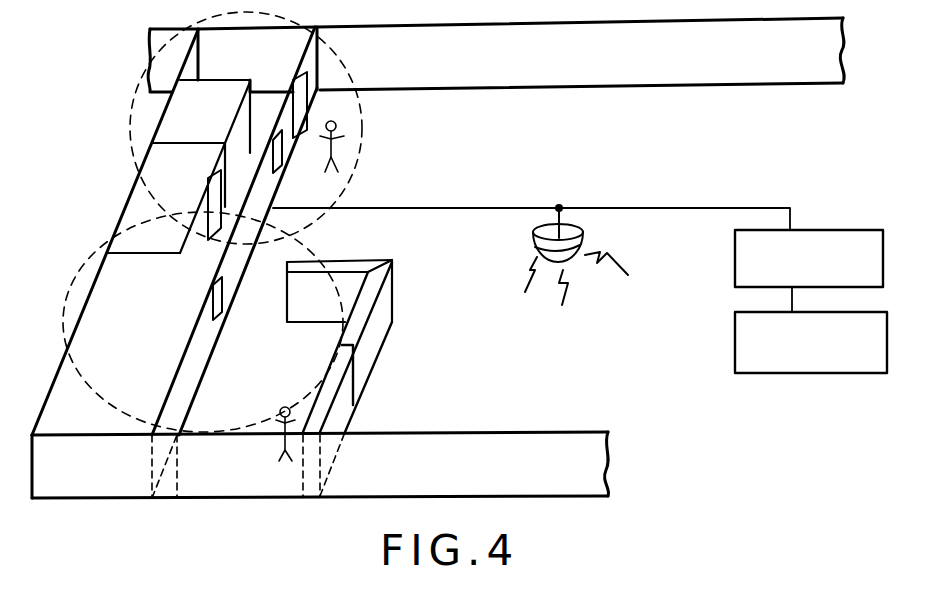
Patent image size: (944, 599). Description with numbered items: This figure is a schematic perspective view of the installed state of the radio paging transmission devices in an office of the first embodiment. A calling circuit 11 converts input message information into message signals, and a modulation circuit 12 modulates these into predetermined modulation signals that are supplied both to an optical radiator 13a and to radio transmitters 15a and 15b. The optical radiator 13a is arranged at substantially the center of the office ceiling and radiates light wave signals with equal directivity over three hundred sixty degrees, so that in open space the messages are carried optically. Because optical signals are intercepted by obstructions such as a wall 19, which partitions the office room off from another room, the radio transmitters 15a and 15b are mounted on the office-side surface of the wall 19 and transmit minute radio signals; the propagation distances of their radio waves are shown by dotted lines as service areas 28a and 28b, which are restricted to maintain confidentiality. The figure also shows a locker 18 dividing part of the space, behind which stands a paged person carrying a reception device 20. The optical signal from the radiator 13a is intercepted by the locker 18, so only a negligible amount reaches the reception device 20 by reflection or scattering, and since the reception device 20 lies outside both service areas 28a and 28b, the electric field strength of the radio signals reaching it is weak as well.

The calling circuit 11 is at (735, 345).
The modulation circuit 12 is at (735, 265).
The optical radiator 13a is at (578, 237).
The radio transmitter 15a is at (277, 148).
The radio transmitter 15b is at (220, 290).
The locker 18 is at (382, 287).
The wall 19 is at (207, 347).
The reception device 20 is at (293, 410).
The service area 28a is at (370, 118).
The service area 28b is at (321, 250).